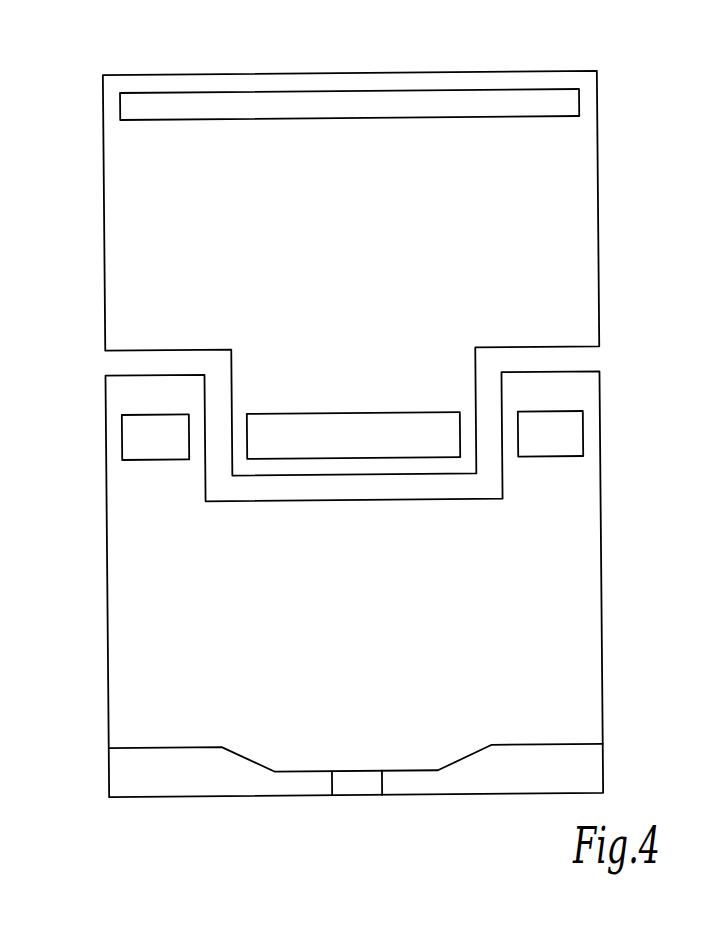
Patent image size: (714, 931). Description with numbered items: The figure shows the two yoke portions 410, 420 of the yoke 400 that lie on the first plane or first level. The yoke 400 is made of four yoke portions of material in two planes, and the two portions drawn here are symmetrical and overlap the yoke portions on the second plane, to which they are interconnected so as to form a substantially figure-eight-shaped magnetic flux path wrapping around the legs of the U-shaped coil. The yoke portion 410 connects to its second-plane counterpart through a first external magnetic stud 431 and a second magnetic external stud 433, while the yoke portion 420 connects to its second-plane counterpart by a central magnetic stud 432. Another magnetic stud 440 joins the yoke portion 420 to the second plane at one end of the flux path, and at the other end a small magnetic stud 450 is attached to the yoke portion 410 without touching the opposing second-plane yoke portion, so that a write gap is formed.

The yoke 400 is at (345, 439).
The yoke portion 410 is at (345, 606).
The yoke portion 420 is at (323, 258).
The first external magnetic stud 431 is at (127, 434).
The central magnetic stud 432 is at (349, 458).
The second magnetic external stud 433 is at (578, 434).
The magnetic stud 440 is at (352, 91).
The small magnetic stud 450 is at (352, 790).